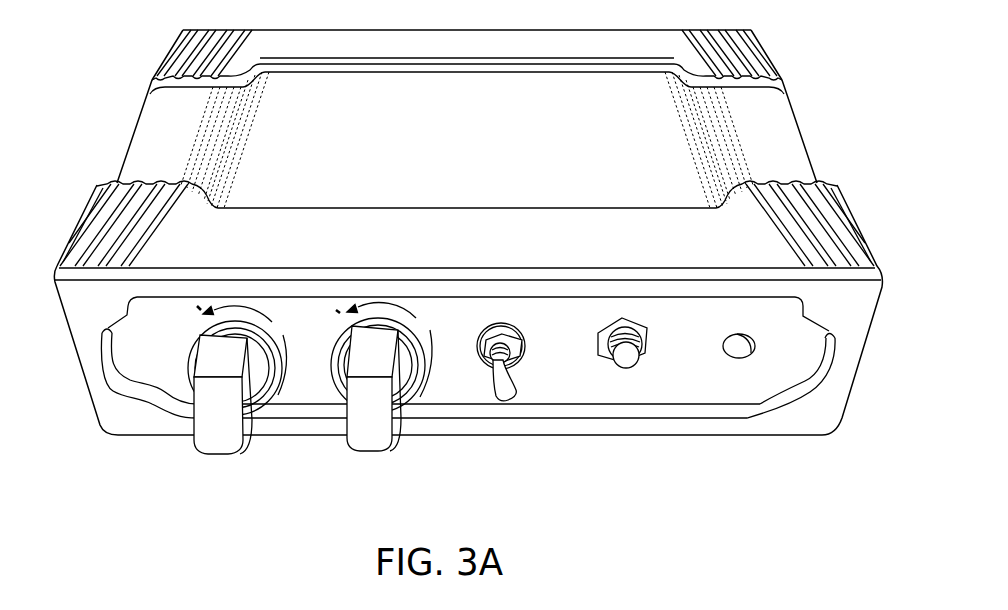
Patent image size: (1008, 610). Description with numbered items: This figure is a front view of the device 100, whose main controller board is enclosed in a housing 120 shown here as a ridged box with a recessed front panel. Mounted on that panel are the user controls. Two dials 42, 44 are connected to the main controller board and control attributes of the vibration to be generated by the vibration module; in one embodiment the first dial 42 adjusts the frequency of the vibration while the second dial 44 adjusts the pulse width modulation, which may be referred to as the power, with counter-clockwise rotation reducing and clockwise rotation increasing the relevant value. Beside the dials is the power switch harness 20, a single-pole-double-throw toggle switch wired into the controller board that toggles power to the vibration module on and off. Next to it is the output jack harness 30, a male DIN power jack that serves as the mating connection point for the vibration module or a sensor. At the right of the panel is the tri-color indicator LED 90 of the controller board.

The device 100 is at (126, 46).
The housing 120 is at (738, 120).
The dial 42 is at (223, 432).
The second dial 44 is at (372, 432).
The power switch harness 20 is at (506, 392).
The output jack harness 30 is at (623, 358).
The tri-color indicator LED 90 is at (740, 352).